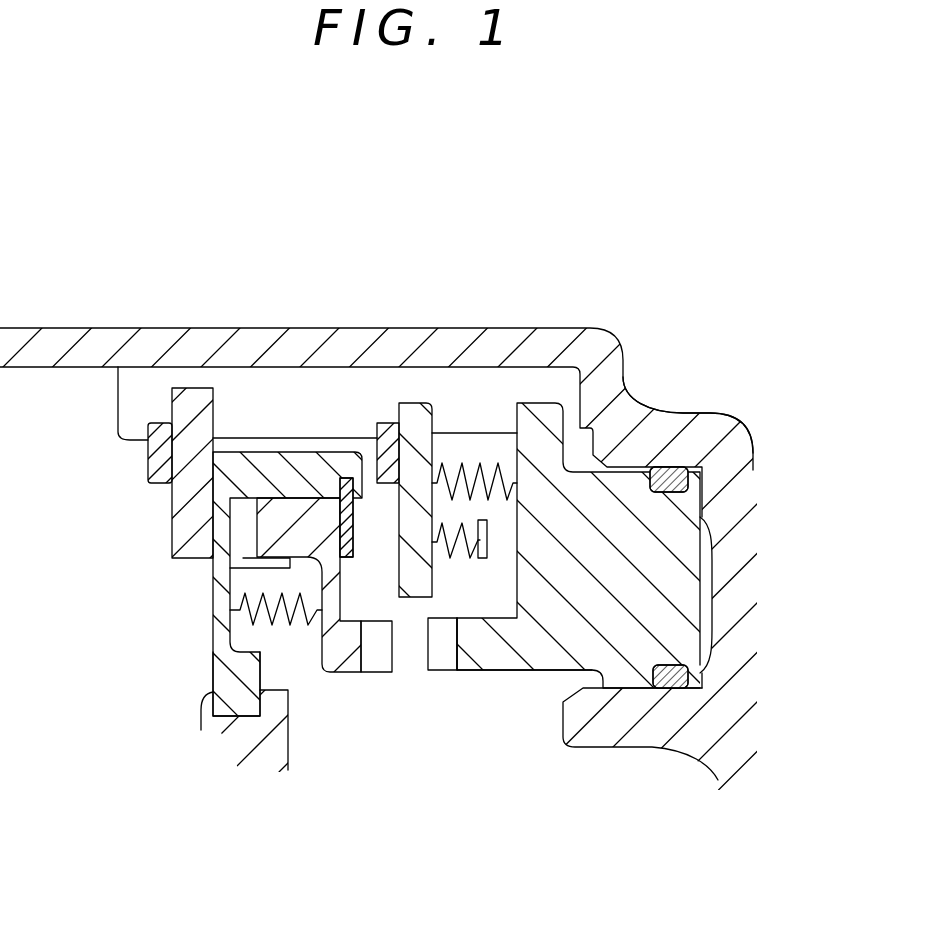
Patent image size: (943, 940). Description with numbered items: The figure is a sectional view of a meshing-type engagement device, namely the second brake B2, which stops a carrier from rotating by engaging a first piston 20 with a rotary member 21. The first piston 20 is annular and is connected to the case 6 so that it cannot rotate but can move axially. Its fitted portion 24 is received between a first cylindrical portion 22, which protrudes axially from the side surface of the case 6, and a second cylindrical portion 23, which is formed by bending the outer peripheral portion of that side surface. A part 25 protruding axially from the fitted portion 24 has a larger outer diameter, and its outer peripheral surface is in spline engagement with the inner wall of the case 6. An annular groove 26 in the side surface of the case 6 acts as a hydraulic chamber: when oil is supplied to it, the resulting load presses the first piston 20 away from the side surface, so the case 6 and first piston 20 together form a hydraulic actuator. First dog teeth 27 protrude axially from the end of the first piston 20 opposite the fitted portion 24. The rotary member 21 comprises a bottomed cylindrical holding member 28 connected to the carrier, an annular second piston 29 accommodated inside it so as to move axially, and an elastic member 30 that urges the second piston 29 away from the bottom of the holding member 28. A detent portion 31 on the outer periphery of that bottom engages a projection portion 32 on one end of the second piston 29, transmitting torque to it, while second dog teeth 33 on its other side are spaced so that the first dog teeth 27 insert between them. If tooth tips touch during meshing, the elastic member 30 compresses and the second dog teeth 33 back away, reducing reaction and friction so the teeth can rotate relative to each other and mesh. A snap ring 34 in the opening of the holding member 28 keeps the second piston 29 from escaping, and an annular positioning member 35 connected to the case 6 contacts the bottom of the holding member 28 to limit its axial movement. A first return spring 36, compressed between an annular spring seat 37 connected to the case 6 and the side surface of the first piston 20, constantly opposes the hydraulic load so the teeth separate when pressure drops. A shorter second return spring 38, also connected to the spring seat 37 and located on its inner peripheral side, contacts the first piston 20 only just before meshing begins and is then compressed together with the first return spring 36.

The second brake B2 is at (484, 275).
The case 6 is at (738, 445).
The first piston 20 is at (498, 694).
The rotary member 21 is at (184, 628).
The first cylindrical portion 22 is at (642, 737).
The second cylindrical portion 23 is at (665, 420).
The fitted portion 24 is at (693, 615).
The part 25 is at (552, 658).
The groove 26 is at (705, 578).
The first dog teeth 27 is at (441, 658).
The holding member 28 is at (223, 680).
The second piston 29 is at (333, 592).
The elastic member 30 is at (290, 630).
The detent portion 31 is at (243, 558).
The projection portion 32 is at (290, 510).
The second dog teeth 33 is at (378, 660).
The snap ring 34 is at (350, 520).
The positioning member 35 is at (195, 398).
The first return spring 36 is at (480, 460).
The spring seat 37 is at (410, 413).
The second return spring 38 is at (455, 558).